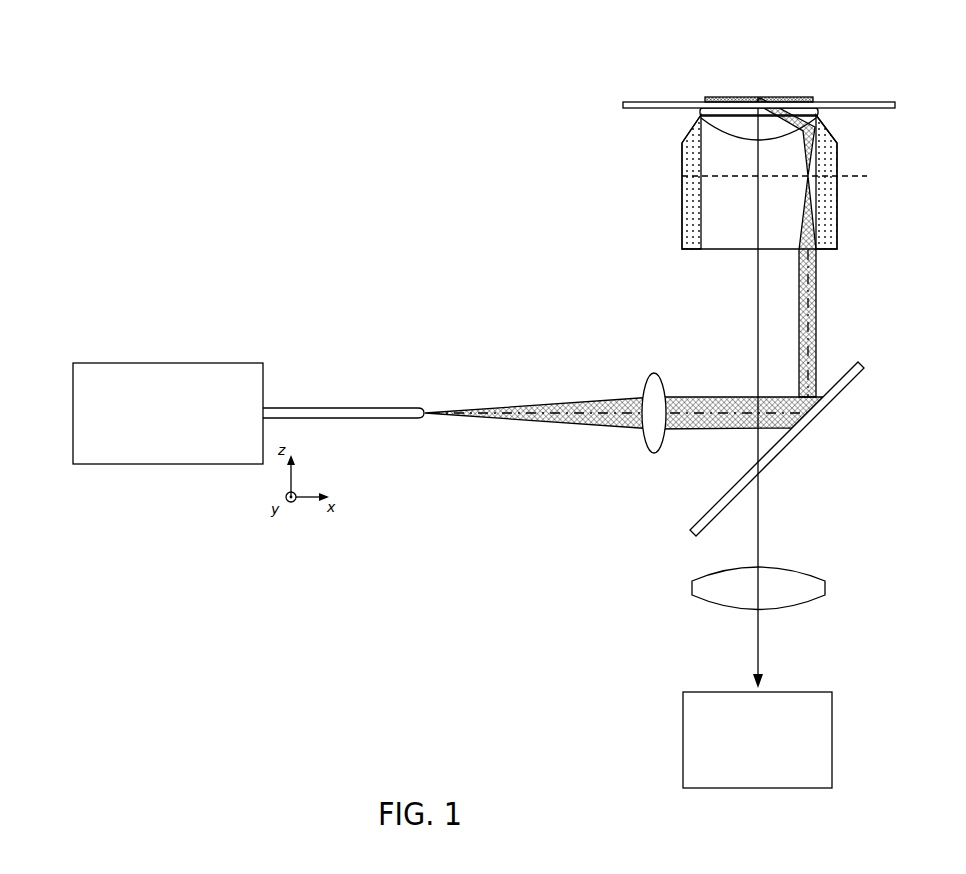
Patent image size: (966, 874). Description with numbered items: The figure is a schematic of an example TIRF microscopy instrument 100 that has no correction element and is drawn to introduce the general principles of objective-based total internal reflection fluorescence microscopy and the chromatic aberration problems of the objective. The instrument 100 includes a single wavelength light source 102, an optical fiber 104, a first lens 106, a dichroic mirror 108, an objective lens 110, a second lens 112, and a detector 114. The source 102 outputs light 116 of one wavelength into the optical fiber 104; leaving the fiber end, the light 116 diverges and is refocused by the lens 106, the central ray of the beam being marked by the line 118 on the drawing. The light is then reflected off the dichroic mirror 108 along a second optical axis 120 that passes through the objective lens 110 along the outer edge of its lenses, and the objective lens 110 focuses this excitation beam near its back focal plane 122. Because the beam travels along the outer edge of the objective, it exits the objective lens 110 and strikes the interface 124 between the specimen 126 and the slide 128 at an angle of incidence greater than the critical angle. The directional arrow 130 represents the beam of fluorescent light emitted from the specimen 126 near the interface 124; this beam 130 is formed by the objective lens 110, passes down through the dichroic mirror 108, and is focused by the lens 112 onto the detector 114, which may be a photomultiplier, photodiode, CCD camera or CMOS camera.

The TIRF microscopy instrument 100 is at (197, 226).
The single wavelength light source 102 is at (168, 453).
The optical fiber 104 is at (397, 420).
The first lens 106 is at (663, 385).
The dichroic mirror 108 is at (857, 383).
The objective lens 110 is at (682, 190).
The second lens 112 is at (807, 602).
The detector 114 is at (823, 765).
The light 116 is at (553, 425).
The optical axis of beam 118 is at (602, 411).
The second optical axis 120 is at (813, 320).
The back focal plane 122 is at (848, 178).
The interface 124 is at (763, 95).
The specimen 126 is at (748, 95).
The slide 128 is at (872, 110).
The directional arrow 130 is at (762, 527).